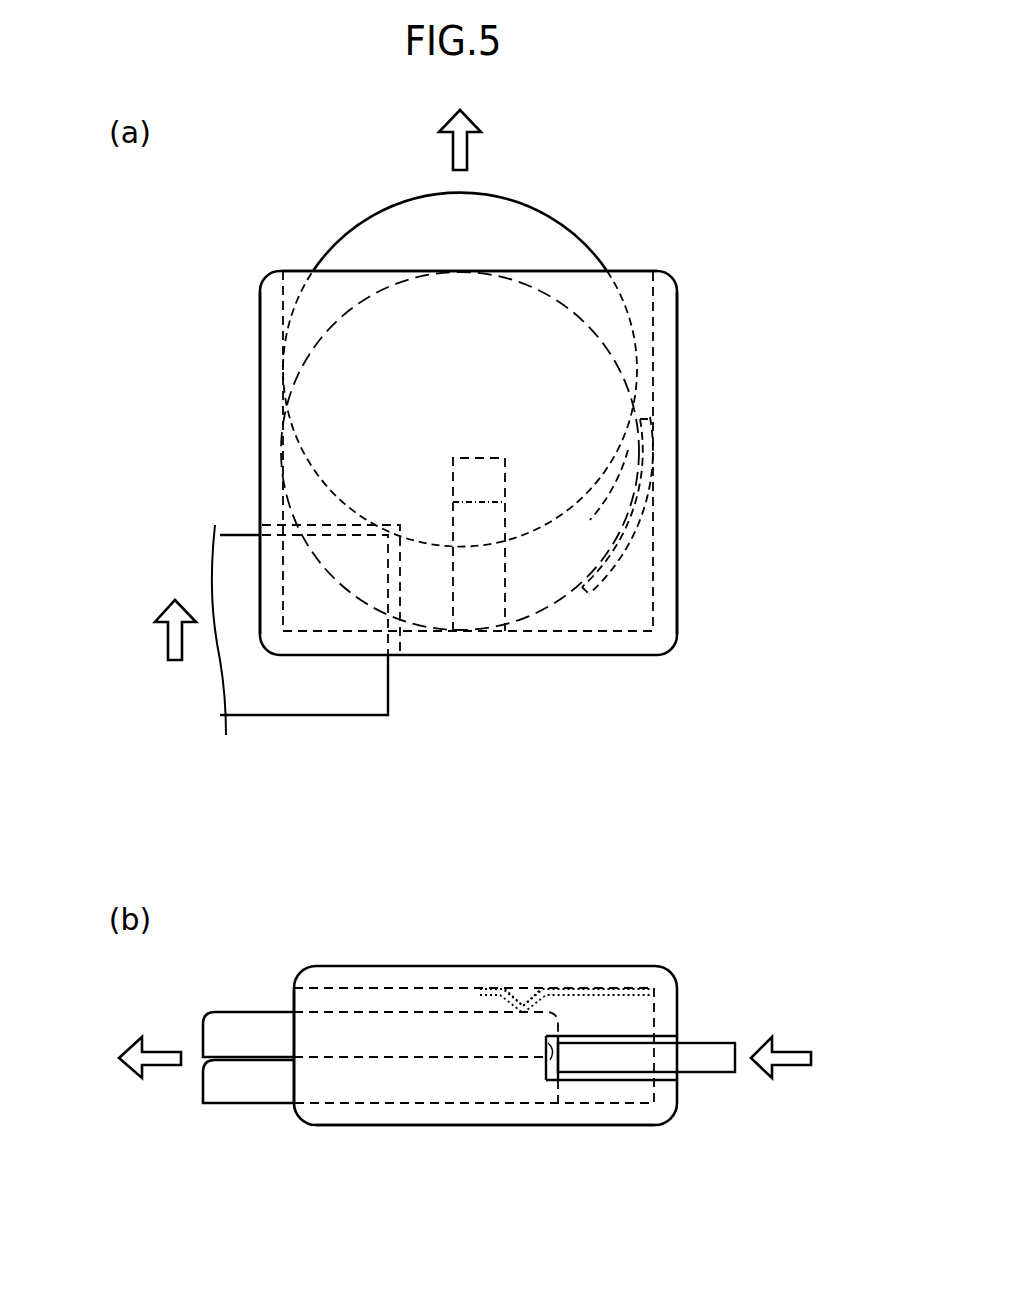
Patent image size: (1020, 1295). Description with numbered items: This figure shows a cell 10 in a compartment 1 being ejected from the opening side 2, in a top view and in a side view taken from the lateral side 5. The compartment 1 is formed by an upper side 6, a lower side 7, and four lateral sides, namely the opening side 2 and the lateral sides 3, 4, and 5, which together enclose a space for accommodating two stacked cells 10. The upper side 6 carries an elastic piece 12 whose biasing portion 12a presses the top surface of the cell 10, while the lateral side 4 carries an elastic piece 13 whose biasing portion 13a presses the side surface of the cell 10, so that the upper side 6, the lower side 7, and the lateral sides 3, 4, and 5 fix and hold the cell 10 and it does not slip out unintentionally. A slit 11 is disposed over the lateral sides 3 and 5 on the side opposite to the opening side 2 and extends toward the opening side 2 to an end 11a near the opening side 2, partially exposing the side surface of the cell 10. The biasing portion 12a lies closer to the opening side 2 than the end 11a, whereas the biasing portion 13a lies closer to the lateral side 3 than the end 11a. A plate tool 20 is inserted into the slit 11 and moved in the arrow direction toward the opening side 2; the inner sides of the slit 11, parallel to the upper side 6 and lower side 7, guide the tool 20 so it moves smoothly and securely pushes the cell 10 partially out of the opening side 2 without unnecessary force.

The compartment 1 is at (698, 222).
The opening side 2 is at (568, 270).
The lateral side 3 is at (572, 656).
The lateral side 4 is at (678, 391).
The lateral side 5 is at (259, 365).
The upper side 6 is at (638, 320).
The lower side 7 is at (585, 1126).
The cell 10 is at (393, 240).
The slit 11 is at (398, 565).
The end of the slit 11a is at (335, 523).
The elastic piece 12 is at (480, 588).
The biasing portion 12a is at (483, 500).
The elastic piece 13 is at (613, 549).
The biasing portion 13a is at (612, 530).
The plate tool 20 is at (325, 716).